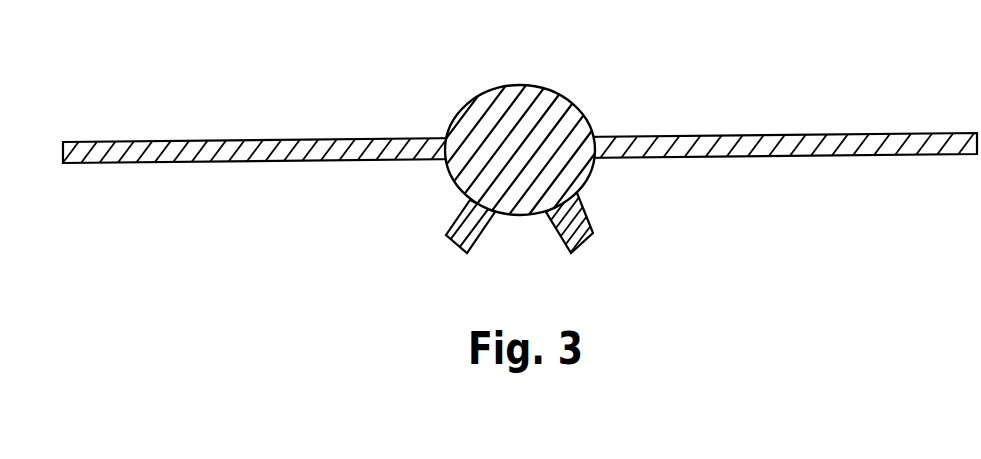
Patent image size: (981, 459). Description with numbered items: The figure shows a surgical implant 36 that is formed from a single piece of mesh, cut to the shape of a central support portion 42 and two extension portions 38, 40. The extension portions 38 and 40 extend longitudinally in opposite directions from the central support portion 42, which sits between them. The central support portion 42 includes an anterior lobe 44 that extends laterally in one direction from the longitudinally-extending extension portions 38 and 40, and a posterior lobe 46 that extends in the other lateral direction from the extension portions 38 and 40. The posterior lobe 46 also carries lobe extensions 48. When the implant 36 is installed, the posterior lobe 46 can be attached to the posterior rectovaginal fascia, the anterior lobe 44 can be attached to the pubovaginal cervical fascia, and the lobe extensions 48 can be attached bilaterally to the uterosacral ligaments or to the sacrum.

The implant 36 is at (609, 50).
The extension portion 38 is at (199, 161).
The extension portion 40 is at (787, 153).
The central support portion 42 is at (446, 203).
The anterior lobe 44 is at (485, 136).
The posterior lobe 46 is at (488, 169).
The lobe extensions 48 is at (476, 238).